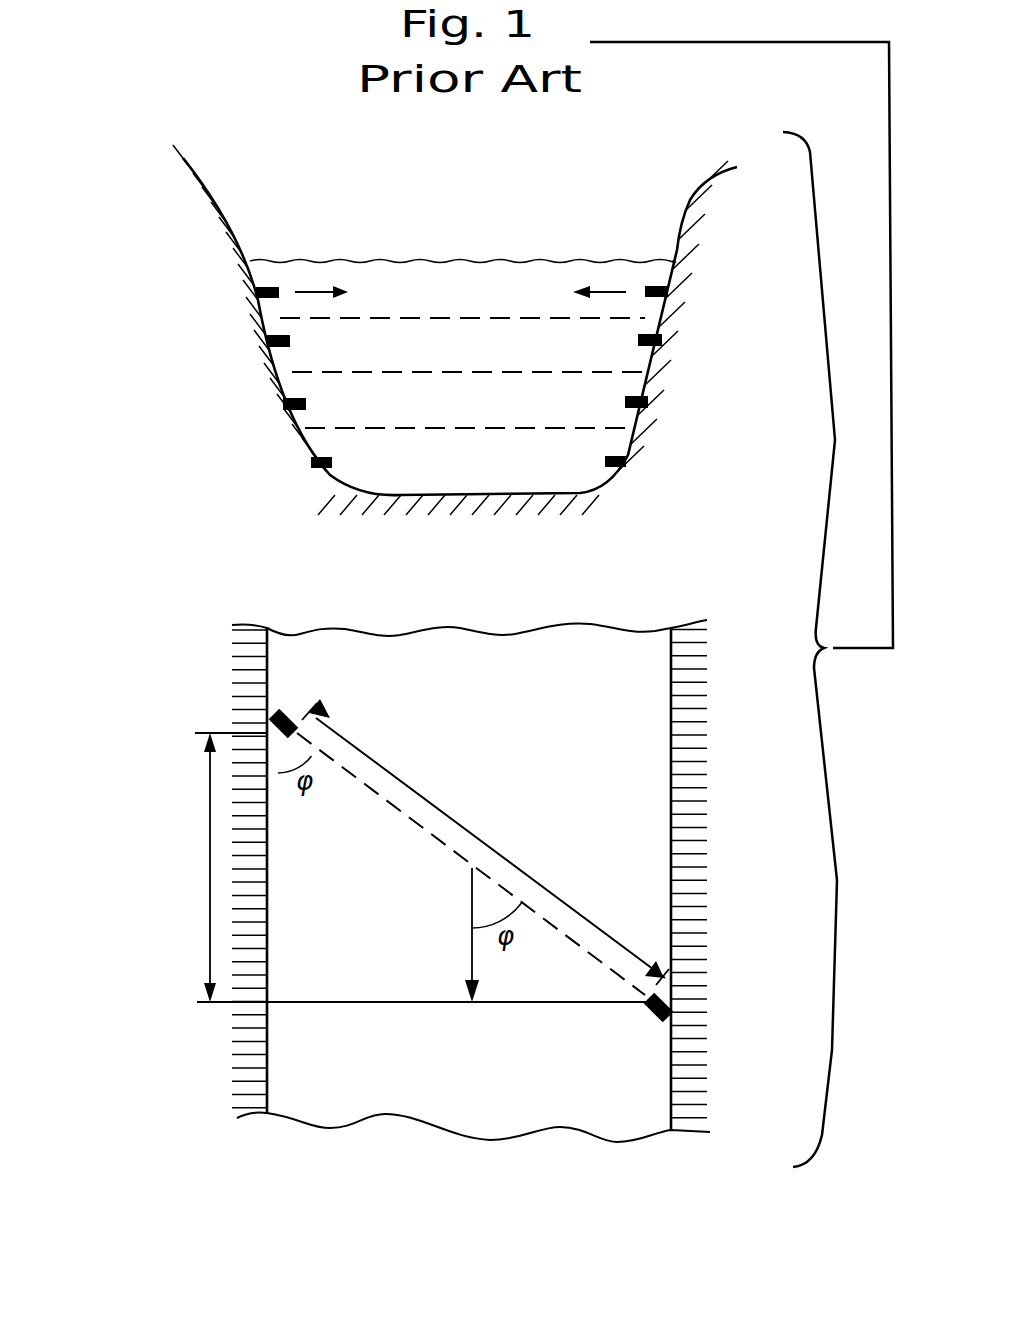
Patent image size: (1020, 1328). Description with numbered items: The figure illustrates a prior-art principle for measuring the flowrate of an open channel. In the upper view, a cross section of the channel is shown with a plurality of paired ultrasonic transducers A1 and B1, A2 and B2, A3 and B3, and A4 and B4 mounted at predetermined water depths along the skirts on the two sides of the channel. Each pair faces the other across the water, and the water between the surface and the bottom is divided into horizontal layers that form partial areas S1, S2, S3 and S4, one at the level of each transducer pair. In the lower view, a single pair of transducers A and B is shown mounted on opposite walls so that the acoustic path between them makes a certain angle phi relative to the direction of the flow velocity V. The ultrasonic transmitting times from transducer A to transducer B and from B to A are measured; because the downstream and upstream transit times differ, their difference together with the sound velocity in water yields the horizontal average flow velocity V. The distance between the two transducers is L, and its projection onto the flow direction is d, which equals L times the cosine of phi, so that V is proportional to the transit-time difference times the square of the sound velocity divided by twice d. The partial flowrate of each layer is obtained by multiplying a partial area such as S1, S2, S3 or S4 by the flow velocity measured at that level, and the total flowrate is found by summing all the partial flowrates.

The ultrasonic transducer A1 is at (257, 292).
The ultrasonic transducer A2 is at (266, 340).
The ultrasonic transducer A3 is at (282, 403).
The ultrasonic transducer A4 is at (309, 461).
The ultrasonic transducer B1 is at (668, 293).
The ultrasonic transducer B2 is at (662, 341).
The ultrasonic transducer B3 is at (648, 404).
The ultrasonic transducer B4 is at (626, 464).
The partial area S1 is at (462, 297).
The partial area S2 is at (470, 352).
The partial area S3 is at (467, 408).
The partial area S4 is at (490, 469).
The transducer A is at (290, 710).
The transducer B is at (652, 1020).
The distance between the transducers L is at (485, 842).
The flow velocity V is at (492, 954).
The projected distance d is at (356, 867).